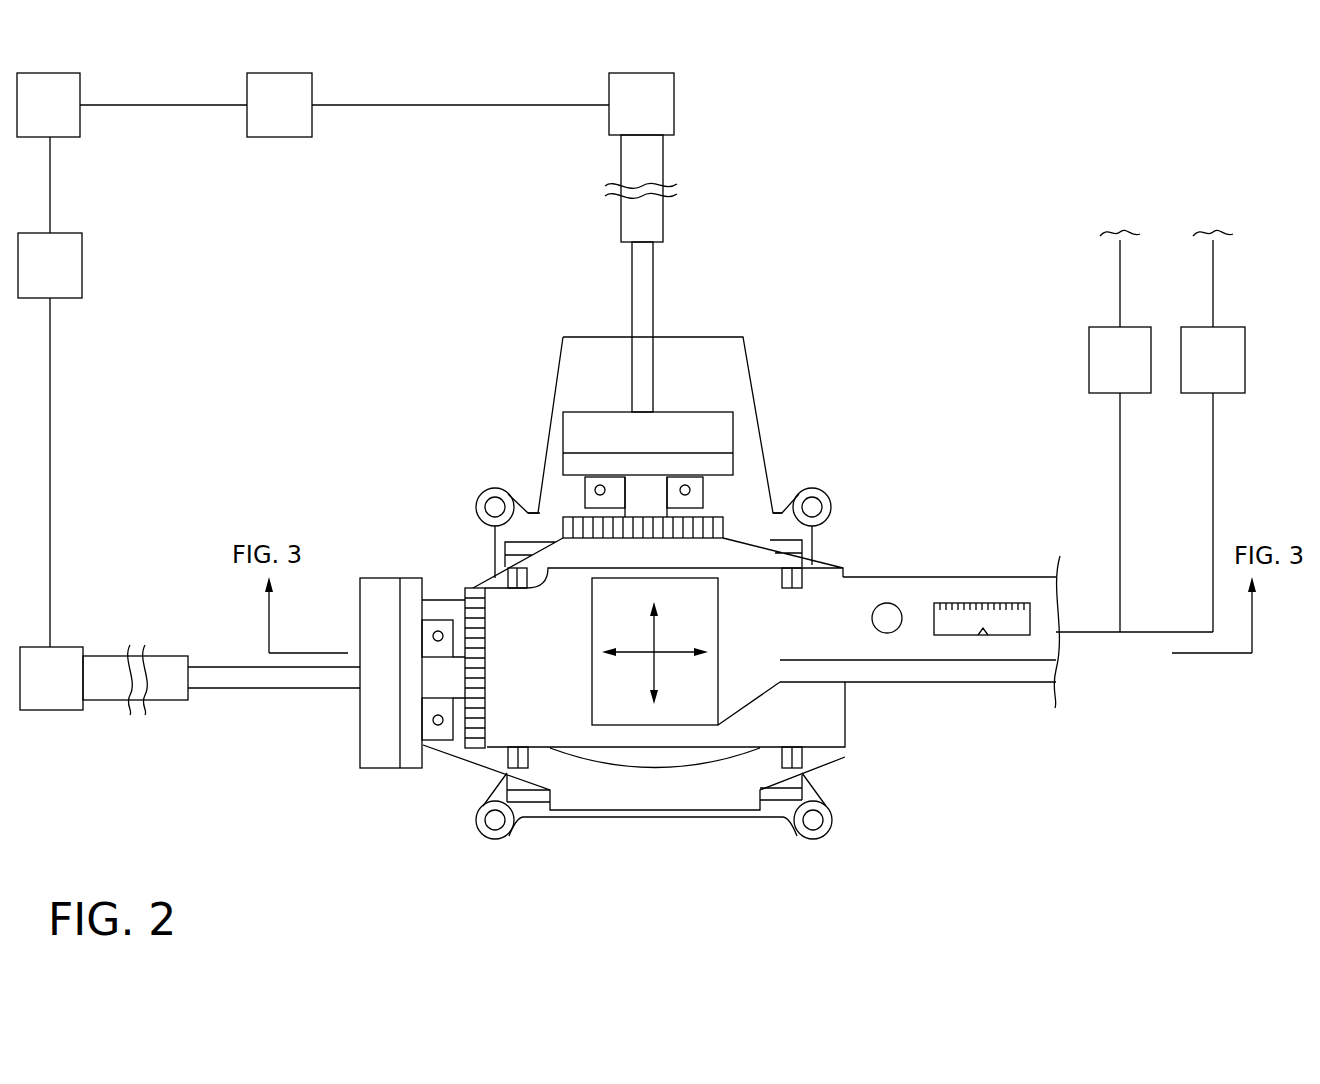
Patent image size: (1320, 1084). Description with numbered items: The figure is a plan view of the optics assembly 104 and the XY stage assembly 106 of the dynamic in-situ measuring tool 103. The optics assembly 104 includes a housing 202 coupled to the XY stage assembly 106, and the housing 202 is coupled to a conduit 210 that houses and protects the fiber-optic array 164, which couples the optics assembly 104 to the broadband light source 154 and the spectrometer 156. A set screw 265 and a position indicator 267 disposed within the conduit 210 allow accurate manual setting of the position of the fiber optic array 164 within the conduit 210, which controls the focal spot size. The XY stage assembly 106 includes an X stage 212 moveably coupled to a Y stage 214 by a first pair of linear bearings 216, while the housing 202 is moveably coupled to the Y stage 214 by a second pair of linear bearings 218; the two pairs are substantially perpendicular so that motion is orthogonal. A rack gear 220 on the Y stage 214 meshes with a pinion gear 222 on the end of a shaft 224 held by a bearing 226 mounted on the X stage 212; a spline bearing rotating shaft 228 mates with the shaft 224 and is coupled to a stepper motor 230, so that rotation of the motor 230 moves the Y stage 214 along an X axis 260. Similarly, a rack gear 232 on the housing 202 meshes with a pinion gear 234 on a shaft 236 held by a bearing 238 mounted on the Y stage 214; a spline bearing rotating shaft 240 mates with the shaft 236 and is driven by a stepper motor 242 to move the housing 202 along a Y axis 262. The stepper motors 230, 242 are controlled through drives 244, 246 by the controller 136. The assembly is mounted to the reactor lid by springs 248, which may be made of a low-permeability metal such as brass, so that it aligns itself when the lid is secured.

The measuring tool 103 is at (922, 256).
The optics assembly 104 is at (684, 745).
The XY stage assembly 106 is at (492, 458).
The controller 136 is at (26, 124).
The broadband light source 154 is at (1191, 376).
The spectrometer 156 is at (1098, 376).
The fiber-optic array 164 is at (1087, 632).
The housing 202 is at (523, 641).
The conduit 210 is at (937, 683).
The X stage 212 is at (558, 354).
The Y stage 214 is at (607, 797).
The first pair of linear bearings 216 is at (495, 548).
The second pair of linear bearings 218 is at (508, 568).
The rack gear 220 is at (703, 513).
The pinion gear 222 is at (653, 530).
The shaft 224 is at (653, 294).
The bearing 226 is at (707, 411).
The spline bearing rotating shaft 228 is at (663, 215).
The stepper motor 230 is at (674, 100).
The rack gear 232 is at (478, 712).
The pinion gear 234 is at (478, 672).
The shaft 236 is at (274, 690).
The bearing 238 is at (360, 748).
The spline bearing rotating shaft 240 is at (170, 655).
The stepper motor 242 is at (52, 712).
The drive 244 is at (258, 124).
The drive 246 is at (28, 282).
The springs 248 is at (480, 497).
The X axis 260 is at (668, 650).
The Y axis 262 is at (665, 655).
The set screw 265 is at (893, 602).
The position indicator 267 is at (978, 603).